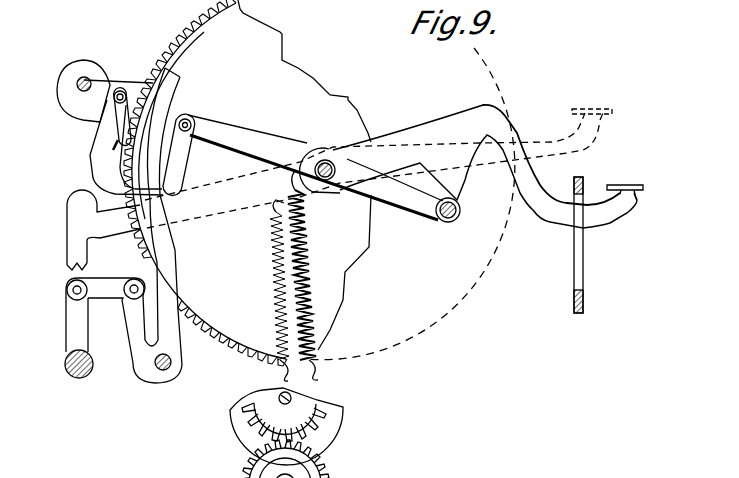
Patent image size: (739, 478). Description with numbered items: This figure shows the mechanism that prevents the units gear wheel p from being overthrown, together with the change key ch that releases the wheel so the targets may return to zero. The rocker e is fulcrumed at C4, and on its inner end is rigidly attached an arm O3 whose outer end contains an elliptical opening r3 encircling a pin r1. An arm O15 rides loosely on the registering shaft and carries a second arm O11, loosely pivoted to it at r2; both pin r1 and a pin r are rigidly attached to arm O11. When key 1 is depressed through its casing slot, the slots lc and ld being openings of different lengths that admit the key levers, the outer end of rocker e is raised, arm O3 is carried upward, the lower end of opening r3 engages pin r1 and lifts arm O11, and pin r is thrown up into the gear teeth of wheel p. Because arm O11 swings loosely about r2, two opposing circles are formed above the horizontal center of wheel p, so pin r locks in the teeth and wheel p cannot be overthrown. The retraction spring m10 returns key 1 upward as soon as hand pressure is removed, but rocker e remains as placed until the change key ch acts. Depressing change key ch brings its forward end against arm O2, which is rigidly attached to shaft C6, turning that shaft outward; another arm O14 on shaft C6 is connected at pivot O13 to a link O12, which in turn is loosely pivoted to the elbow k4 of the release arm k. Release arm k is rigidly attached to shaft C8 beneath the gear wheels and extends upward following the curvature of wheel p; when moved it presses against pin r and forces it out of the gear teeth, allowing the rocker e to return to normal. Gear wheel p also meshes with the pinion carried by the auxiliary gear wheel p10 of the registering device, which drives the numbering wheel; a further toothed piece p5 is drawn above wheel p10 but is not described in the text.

The gear wheel p is at (319, 183).
The release arm k is at (178, 76).
The elbow k4 is at (135, 341).
The shaft C8 is at (164, 372).
The link O12 is at (101, 288).
The pivot O13 is at (67, 291).
The arm O14 is at (70, 334).
The shaft C6 is at (80, 378).
The arm O2 is at (75, 228).
The pin r is at (113, 151).
The arm O15 is at (62, 73).
The pivot r2 is at (88, 82).
The pin r1 is at (118, 90).
The elliptical opening r3 is at (88, 160).
The arm O11 is at (94, 101).
The arm O3 is at (184, 164).
The rocker e is at (453, 219).
The fulcrum C4 is at (325, 162).
The change key ch is at (391, 158).
The slot lc is at (585, 245).
The slot ld is at (587, 293).
The key 1 is at (625, 182).
The retraction spring m10 is at (303, 264).
The sector gear p5 is at (298, 426).
The auxiliary gear wheel p10 is at (298, 459).